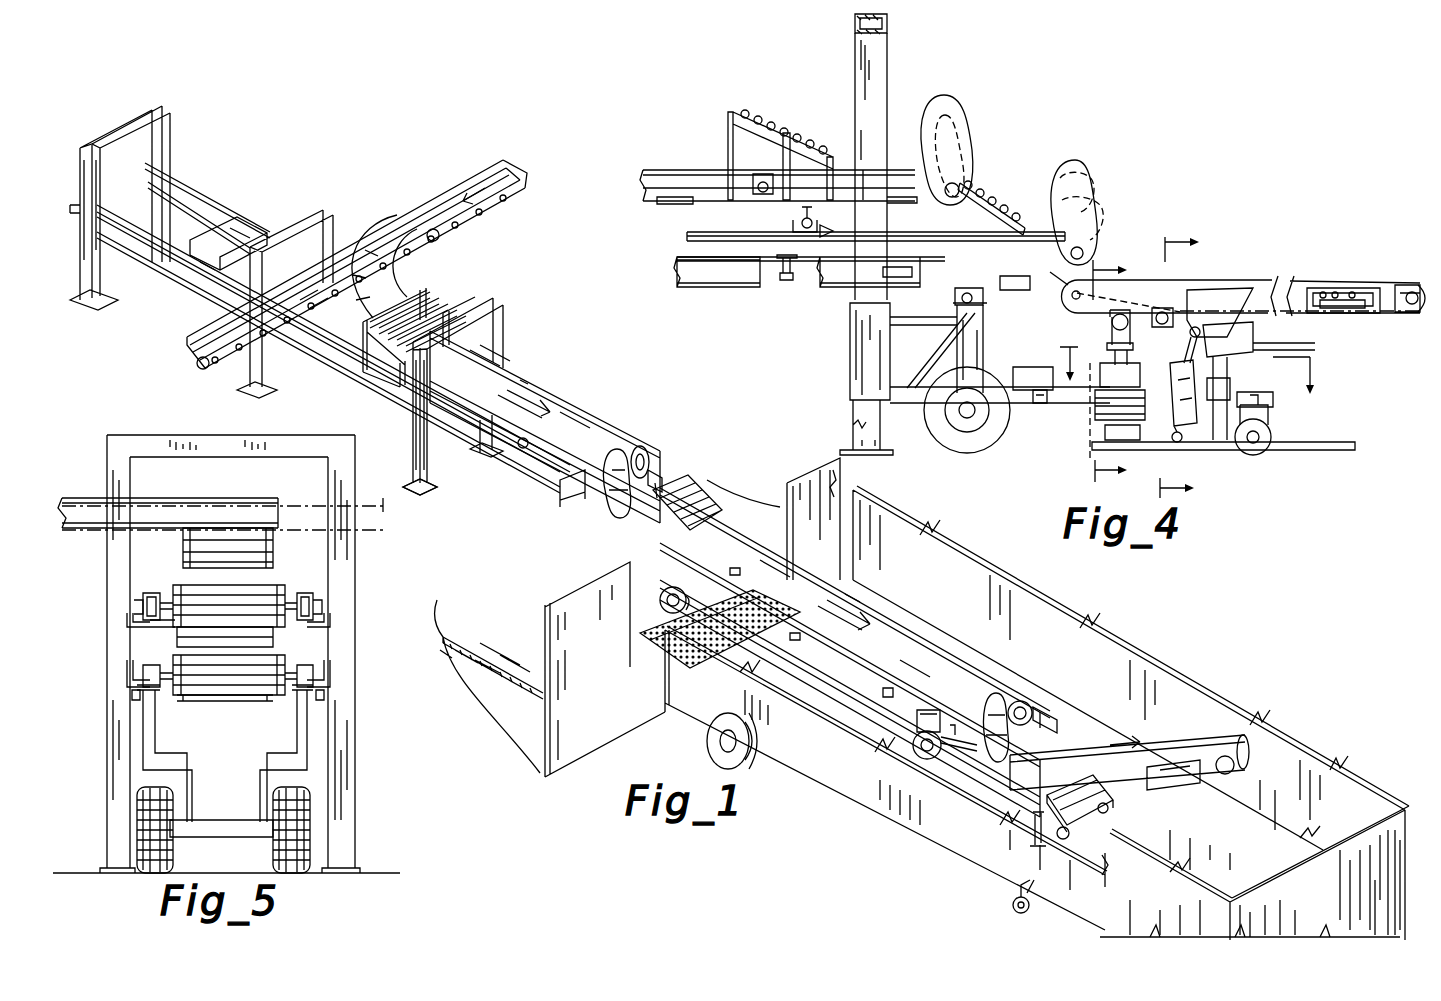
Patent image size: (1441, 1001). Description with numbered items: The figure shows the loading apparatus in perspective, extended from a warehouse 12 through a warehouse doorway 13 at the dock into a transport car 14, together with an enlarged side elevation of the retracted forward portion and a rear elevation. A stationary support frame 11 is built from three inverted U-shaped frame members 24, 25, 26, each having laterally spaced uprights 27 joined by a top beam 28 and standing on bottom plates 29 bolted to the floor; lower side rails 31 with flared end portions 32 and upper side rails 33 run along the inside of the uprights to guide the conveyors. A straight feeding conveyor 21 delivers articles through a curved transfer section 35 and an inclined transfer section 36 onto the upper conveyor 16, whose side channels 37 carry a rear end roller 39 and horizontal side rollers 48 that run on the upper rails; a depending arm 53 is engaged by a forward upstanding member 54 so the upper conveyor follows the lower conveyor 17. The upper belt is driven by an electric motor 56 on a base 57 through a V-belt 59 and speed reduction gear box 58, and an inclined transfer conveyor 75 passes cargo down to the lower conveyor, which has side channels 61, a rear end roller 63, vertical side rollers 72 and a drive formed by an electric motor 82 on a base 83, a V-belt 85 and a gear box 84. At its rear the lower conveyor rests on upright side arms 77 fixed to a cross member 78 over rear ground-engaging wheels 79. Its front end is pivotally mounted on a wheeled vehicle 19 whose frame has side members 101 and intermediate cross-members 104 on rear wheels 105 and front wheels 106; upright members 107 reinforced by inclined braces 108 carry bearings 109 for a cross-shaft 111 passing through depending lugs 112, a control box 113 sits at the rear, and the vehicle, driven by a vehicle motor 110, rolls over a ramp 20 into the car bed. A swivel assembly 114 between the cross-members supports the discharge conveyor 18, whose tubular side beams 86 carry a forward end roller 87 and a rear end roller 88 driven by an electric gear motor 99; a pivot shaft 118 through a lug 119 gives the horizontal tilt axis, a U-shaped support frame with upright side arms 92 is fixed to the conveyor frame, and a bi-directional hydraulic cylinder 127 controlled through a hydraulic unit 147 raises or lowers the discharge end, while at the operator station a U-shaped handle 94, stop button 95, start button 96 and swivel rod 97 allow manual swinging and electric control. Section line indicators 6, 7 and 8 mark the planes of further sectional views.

In FIG. 4, the section line 6- 6 is at (1117, 370).
In FIG. 4, the section line 7- 7 is at (1187, 366).
In FIG. 4, the section line 8- 8 is at (1187, 383).
In FIG. 1, the support frame 11 is at (345, 206).
In FIG. 5, the support frame 11 is at (127, 436).
In FIG. 1, the warehouse 12 is at (533, 635).
In FIG. 1, the warehouse doorway 13 is at (782, 495).
In FIG. 1, the transport car 14 is at (1307, 755).
In FIG. 1, the upper conveyor 16 is at (502, 396).
In FIG. 4, the upper conveyor 16 is at (699, 170).
In FIG. 5, the upper conveyor 16 is at (266, 604).
In FIG. 1, the lower conveyor 17 is at (906, 655).
In FIG. 4, the lower conveyor 17 is at (710, 234).
In FIG. 5, the lower conveyor 17 is at (285, 661).
In FIG. 1, the discharge conveyor 18 is at (1155, 750).
In FIG. 4, the discharge conveyor 18 is at (1237, 277).
In FIG. 1, the wheeled vehicle 19 is at (1037, 822).
In FIG. 4, the wheeled vehicle 19 is at (1122, 394).
In FIG. 5, the wheeled vehicle 19 is at (266, 761).
In FIG. 1, the ramp 20 is at (640, 655).
In FIG. 1, the straight feeding conveyor 21 is at (467, 174).
In FIG. 5, the straight feeding conveyor 21 is at (84, 499).
In FIG. 1, the frame member 24 is at (170, 110).
In FIG. 5, the frame member 24 is at (354, 608).
In FIG. 1, the frame member 25 is at (287, 225).
In FIG. 1, the frame member 26 is at (541, 277).
In FIG. 4, the frame member 26 is at (886, 70).
In FIG. 5, the uprights 27 is at (112, 763).
In FIG. 4, the top beam 28 is at (888, 20).
In FIG. 5, the top beam 28 is at (190, 445).
In FIG. 1, the bottom plate 29 is at (425, 493).
In FIG. 4, the bottom plate 29 is at (858, 447).
In FIG. 5, the bottom plate 29 is at (390, 848).
In FIG. 1, the lower side rails 31 is at (148, 193).
In FIG. 4, the lower side rails 31 is at (720, 272).
In FIG. 5, the lower side rails 31 is at (330, 663).
In FIG. 1, the flared end portions 32 is at (437, 418).
In FIG. 4, the flared end portions 32 is at (900, 275).
In FIG. 4, the upper side rails 33 is at (670, 200).
In FIG. 5, the upper side rails 33 is at (150, 630).
In FIG. 1, the curved transfer section 35 is at (404, 216).
In FIG. 1, the inclined transfer section 36 is at (472, 283).
In FIG. 4, the inclined transfer section 36 is at (808, 115).
In FIG. 5, the inclined transfer section 36 is at (183, 548).
In FIG. 1, the side channels 37 is at (560, 485).
In FIG. 5, the side channels 37 is at (160, 568).
In FIG. 5, the rear end roller 39 is at (167, 624).
In FIG. 1, the horizontal side roller 48 is at (522, 448).
In FIG. 4, the horizontal side roller 48 is at (760, 190).
In FIG. 5, the horizontal side roller 48 is at (320, 601).
In FIG. 4, the arm 53 is at (817, 220).
In FIG. 4, the forward upstanding member 54 is at (830, 232).
In FIG. 1, the electric motor 56 is at (628, 447).
In FIG. 4, the electric motor 56 is at (965, 103).
In FIG. 1, the base 57 is at (646, 482).
In FIG. 1, the speed reduction gear box 58 is at (652, 495).
In FIG. 4, the V-belt 59 is at (957, 143).
In FIG. 4, the side channels 61 is at (700, 247).
In FIG. 5, the rear end roller 63 is at (207, 685).
In FIG. 4, the vertical side roller 72 is at (782, 280).
In FIG. 1, the inclined transfer conveyor 75 is at (690, 490).
In FIG. 4, the inclined transfer conveyor 75 is at (1018, 212).
In FIG. 5, the upright side arms 77 is at (147, 760).
In FIG. 5, the cross member 78 is at (237, 828).
In FIG. 1, the rear ground-engaging wheels 79 is at (662, 600).
In FIG. 5, the rear ground-engaging wheels 79 is at (150, 860).
In FIG. 1, the electric motor 82 is at (1000, 695).
In FIG. 4, the electric motor 82 is at (1085, 160).
In FIG. 1, the base 83 is at (1022, 718).
In FIG. 4, the base 83 is at (1092, 185).
In FIG. 1, the gear box 84 is at (1052, 733).
In FIG. 4, the V-belt 85 is at (1100, 222).
In FIG. 4, the side beams 86 is at (1100, 270).
In FIG. 4, the forward end roller 87 is at (1426, 300).
In FIG. 4, the rear end roller 88 is at (1050, 272).
In FIG. 4, the upright side arms 92 is at (1233, 298).
In FIG. 4, the U-shaped handle 94 is at (1350, 312).
In FIG. 4, the stop button 95 is at (1323, 292).
In FIG. 4, the start button 96 is at (1336, 292).
In FIG. 4, the swivel rod 97 is at (1353, 291).
In FIG. 4, the electric gear motor 99 is at (1177, 312).
In FIG. 4, the side members 101 is at (1057, 398).
In FIG. 4, the intermediate cross-members 104 is at (1153, 420).
In FIG. 1, the rear wheels 105 is at (907, 748).
In FIG. 4, the rear wheels 105 is at (953, 430).
In FIG. 1, the front wheels 106 is at (1082, 830).
In FIG. 4, the upright members 107 is at (972, 325).
In FIG. 4, the downwardly inclined brace 108 is at (922, 375).
In FIG. 4, the bearing 109 is at (980, 285).
In FIG. 4, the vehicle motor 110 is at (1020, 348).
In FIG. 4, the cross-shaft 111 is at (962, 293).
In FIG. 4, the depending lugs 112 is at (1003, 275).
In FIG. 4, the box for the electric control 113 is at (858, 326).
In FIG. 4, the swivel assembly 114 is at (1045, 398).
In FIG. 4, the pivot shaft 118 is at (1112, 330).
In FIG. 4, the lug 119 is at (1123, 317).
In FIG. 4, the bi-directional hydraulic cylinder 127 is at (1183, 392).
In FIG. 4, the hydraulic unit 147 is at (1253, 343).